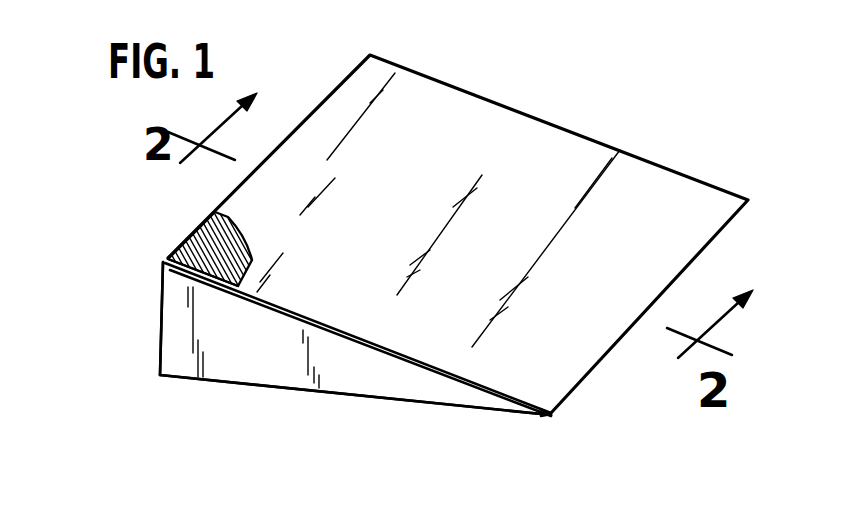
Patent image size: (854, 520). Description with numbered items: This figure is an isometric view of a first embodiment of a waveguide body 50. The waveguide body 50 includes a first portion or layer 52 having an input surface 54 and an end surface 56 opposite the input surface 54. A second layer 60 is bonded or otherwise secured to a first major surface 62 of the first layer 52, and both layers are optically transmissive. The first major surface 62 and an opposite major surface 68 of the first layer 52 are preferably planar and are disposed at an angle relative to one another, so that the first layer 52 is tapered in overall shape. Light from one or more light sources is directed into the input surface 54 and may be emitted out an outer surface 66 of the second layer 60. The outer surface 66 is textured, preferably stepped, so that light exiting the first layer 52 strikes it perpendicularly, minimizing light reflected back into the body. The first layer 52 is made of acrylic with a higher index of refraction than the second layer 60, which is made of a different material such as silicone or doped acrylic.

The waveguide body 50 is at (203, 383).
The first layer 52 is at (293, 380).
The input surface 54 is at (163, 313).
The end surface 56 is at (550, 414).
The second layer 60 is at (247, 208).
The first major surface 62 is at (405, 362).
The outer surface 66 is at (195, 258).
The opposite major surface 68 is at (473, 408).